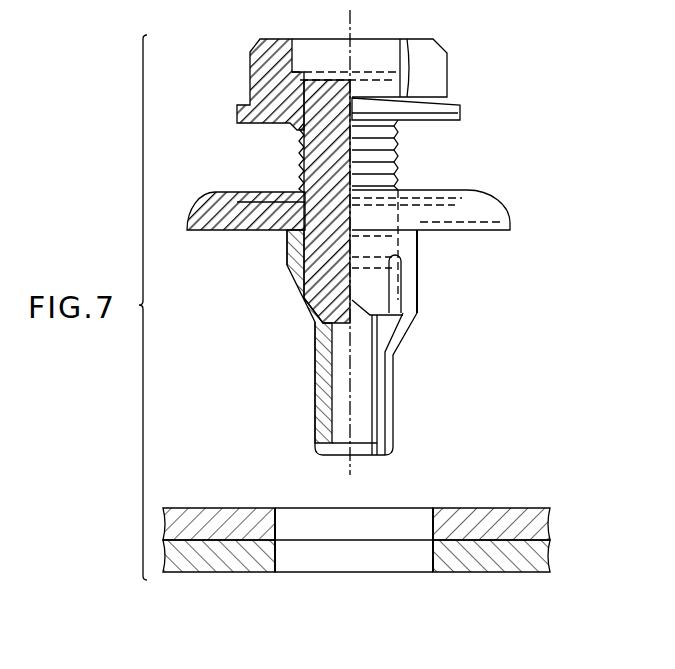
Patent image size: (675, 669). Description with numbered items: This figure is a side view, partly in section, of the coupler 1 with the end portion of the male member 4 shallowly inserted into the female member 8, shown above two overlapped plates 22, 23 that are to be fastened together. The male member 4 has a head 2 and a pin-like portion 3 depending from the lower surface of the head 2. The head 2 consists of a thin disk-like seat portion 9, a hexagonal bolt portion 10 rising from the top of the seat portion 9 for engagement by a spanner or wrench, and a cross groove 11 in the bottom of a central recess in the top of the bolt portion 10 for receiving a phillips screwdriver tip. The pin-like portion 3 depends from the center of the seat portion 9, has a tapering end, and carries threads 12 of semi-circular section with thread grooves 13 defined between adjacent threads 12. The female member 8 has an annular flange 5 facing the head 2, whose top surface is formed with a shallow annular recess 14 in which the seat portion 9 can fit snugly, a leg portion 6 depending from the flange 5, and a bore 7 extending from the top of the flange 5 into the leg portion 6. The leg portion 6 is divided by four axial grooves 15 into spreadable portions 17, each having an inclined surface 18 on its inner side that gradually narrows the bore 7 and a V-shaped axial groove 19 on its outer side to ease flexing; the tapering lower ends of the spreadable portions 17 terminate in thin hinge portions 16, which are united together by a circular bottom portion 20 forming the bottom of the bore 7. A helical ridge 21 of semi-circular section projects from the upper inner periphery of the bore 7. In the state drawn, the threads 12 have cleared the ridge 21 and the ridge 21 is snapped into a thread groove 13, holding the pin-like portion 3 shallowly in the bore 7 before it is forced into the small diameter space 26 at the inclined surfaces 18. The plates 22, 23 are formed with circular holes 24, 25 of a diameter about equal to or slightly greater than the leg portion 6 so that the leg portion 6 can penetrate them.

The coupler 1 is at (548, 95).
The head 2 is at (489, 42).
The pin-like portion 3 is at (381, 201).
The male member 4 is at (513, 65).
The flange 5 is at (499, 230).
The leg portion 6 is at (489, 255).
The bore 7 is at (290, 263).
The female member 8 is at (519, 235).
The seat portion 9 is at (455, 112).
The bolt portion 10 is at (428, 72).
The cross groove 11 is at (330, 85).
The threads 12 is at (300, 155).
The thread grooves 13 is at (290, 183).
The annular recess 14 is at (243, 193).
The axial grooves 15 is at (400, 300).
The hinge portions 16 is at (405, 332).
The spreadable portions 17 is at (405, 268).
The inclined surface 18 is at (307, 340).
The axial groove 19 is at (397, 350).
The bottom portion 20 is at (342, 447).
The ridge 21 is at (290, 237).
The plate 22 is at (540, 527).
The plate 23 is at (540, 562).
The circular hole 24 is at (421, 512).
The circular hole 25 is at (421, 560).
The small diameter space 26 is at (335, 423).